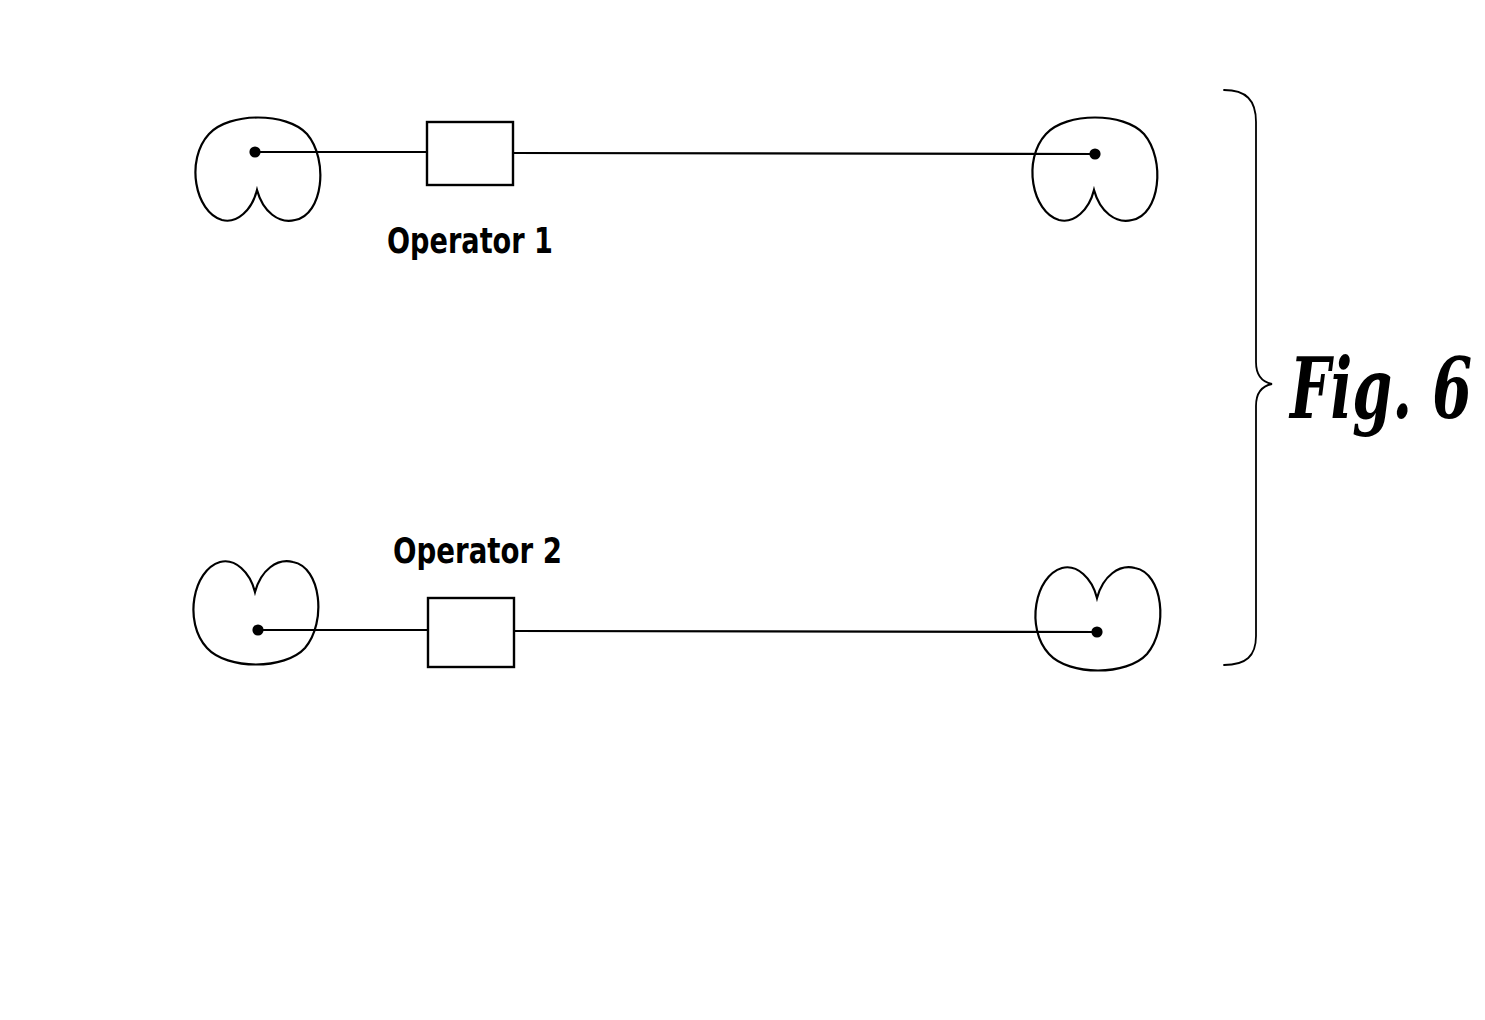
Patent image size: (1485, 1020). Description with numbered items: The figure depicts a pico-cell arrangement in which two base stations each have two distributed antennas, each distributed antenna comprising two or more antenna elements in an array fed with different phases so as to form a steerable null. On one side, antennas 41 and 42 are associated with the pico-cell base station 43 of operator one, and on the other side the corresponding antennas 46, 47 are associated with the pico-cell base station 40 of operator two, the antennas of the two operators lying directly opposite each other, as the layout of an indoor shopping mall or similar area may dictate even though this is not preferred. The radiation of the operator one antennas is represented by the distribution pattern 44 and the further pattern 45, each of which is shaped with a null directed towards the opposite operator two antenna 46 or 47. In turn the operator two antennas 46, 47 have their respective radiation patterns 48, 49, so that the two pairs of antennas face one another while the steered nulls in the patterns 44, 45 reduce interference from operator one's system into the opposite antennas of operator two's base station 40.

The pico-cell base station 40 is at (486, 651).
The antenna 41 is at (259, 148).
The antenna 42 is at (1100, 152).
The pico-cell base station 43 is at (485, 170).
The distribution pattern 44 is at (292, 202).
The coverage area of base station 42 45 is at (1135, 208).
The antenna 46 is at (254, 634).
The antenna 47 is at (1093, 636).
The radiation pattern 48 is at (290, 581).
The radiation pattern 49 is at (1137, 603).